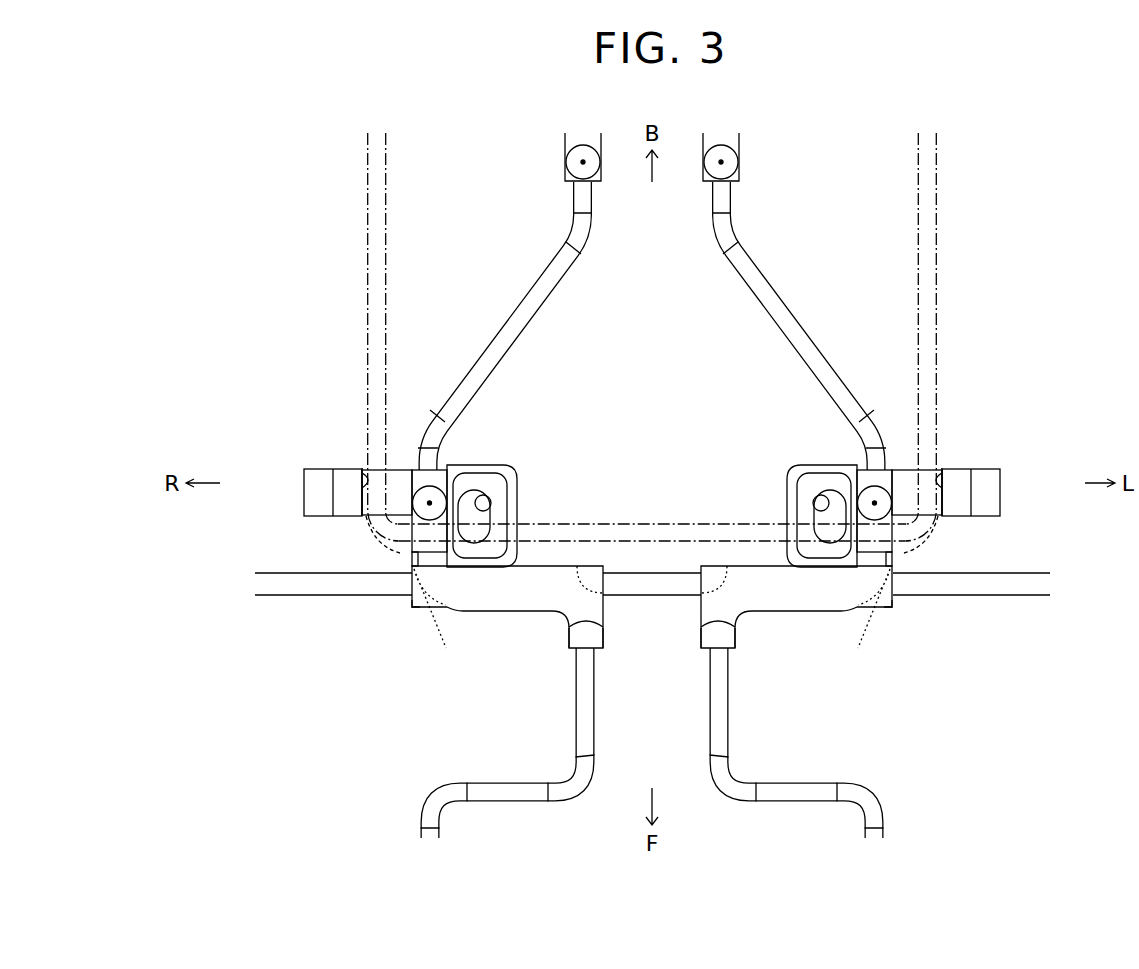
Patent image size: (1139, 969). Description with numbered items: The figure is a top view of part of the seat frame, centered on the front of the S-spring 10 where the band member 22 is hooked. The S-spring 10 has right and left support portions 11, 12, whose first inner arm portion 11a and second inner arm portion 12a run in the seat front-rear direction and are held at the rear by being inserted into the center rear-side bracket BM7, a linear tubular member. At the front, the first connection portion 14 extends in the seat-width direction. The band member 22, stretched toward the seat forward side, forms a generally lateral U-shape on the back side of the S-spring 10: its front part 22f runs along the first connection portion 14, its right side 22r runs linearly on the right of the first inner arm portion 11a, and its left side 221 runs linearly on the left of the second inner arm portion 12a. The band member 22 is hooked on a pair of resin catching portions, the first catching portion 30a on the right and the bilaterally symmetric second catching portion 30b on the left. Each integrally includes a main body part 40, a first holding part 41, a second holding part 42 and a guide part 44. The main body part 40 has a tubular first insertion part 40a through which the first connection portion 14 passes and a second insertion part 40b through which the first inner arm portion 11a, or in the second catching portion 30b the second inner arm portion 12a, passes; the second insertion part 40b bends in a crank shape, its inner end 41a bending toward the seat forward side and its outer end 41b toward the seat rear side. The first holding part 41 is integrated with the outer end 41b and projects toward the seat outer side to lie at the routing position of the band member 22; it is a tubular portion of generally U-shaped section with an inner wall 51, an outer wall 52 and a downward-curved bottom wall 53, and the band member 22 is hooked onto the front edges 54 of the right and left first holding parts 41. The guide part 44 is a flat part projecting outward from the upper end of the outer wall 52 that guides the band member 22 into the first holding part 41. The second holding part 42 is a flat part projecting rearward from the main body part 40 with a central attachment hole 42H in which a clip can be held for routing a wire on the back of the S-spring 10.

The rear-side bracket BM7 is at (566, 145).
The band member 22 is at (942, 201).
The right side of band member 22r is at (367, 247).
The front part of band member 22f is at (652, 522).
The left side of band member 221 is at (937, 246).
The first connection portion 14 is at (993, 584).
The S-spring 10 is at (610, 687).
The support portion 11 is at (534, 743).
The support portion 12 is at (770, 743).
The first inner arm portion 11a is at (494, 787).
The second inner arm portion 12a is at (810, 787).
The first catching portion 30a is at (406, 607).
The second catching portion 30b is at (898, 607).
The main body part 40 is at (452, 672).
The first insertion part 40a is at (412, 609).
The second insertion part 40b is at (652, 621).
The first holding part 41 is at (412, 389).
The inner end 41a is at (577, 638).
The outer end 41b is at (440, 466).
The second holding part 42 is at (491, 466).
The attachment hole 42H is at (489, 498).
The guide part 44 is at (322, 489).
The inner wall 51 is at (416, 468).
The outer wall 52 is at (366, 470).
The bottom wall 53 is at (393, 490).
The front edge 54 is at (378, 532).